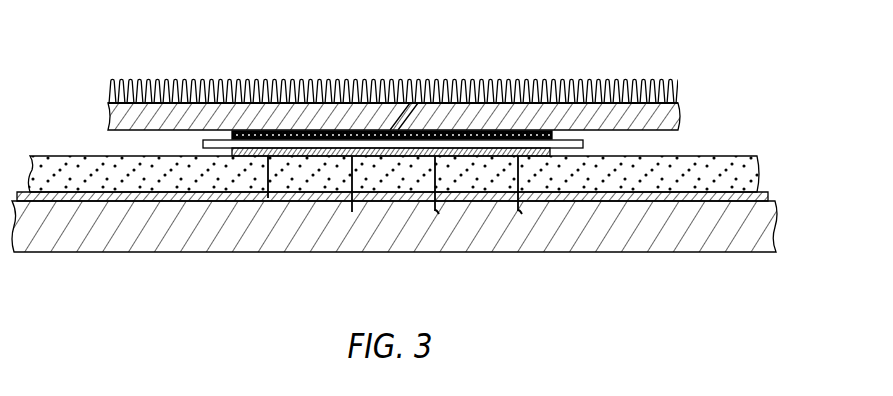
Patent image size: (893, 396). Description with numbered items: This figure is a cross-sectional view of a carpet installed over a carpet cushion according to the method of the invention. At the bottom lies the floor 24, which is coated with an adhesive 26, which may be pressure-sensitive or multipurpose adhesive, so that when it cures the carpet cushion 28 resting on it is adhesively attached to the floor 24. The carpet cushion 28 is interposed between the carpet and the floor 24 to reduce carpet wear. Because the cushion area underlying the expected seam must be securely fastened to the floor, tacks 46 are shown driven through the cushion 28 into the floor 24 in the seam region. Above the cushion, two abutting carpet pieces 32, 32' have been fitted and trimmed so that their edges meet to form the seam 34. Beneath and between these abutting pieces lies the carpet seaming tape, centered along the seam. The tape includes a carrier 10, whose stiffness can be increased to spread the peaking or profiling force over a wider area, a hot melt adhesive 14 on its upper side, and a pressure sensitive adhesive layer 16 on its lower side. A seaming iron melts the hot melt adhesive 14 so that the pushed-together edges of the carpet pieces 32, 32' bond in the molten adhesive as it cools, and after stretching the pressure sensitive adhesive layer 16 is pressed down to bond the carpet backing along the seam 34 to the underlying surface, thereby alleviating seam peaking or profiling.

The carpet seaming tape carrier 10 is at (222, 146).
The hot melt adhesive 14 is at (252, 133).
The pressure sensitive adhesive layer 16 is at (318, 153).
The floor 24 is at (767, 223).
The adhesive 26 is at (768, 196).
The carpet cushion 28 is at (750, 167).
The carpet 32 is at (394, 71).
The carpet piece 32' is at (449, 71).
The seam 34 is at (394, 130).
The tacks 46 is at (520, 211).